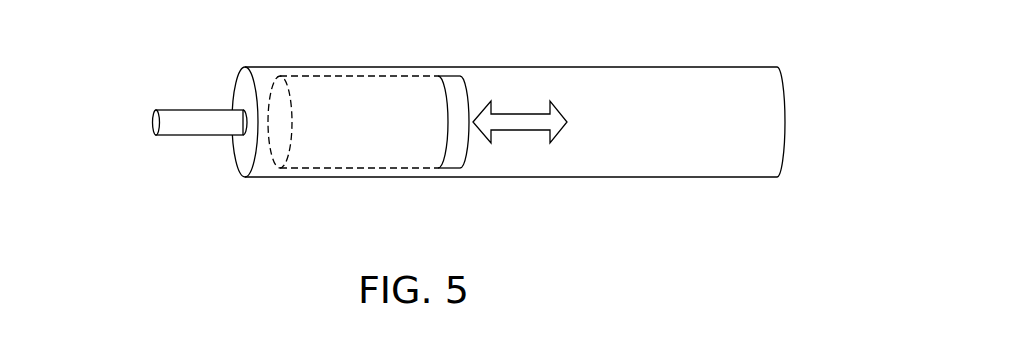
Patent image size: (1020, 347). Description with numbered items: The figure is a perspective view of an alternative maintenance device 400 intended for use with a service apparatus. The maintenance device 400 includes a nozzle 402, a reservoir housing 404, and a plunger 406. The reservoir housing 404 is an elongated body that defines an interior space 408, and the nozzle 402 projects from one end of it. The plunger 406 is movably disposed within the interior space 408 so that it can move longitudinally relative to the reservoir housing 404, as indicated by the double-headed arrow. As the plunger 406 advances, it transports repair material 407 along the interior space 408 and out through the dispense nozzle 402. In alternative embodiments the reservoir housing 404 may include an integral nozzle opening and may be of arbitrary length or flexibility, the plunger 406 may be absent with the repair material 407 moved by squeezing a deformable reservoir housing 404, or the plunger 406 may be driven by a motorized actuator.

The maintenance device 400 is at (136, 36).
The nozzle 402 is at (202, 135).
The reservoir housing 404 is at (673, 67).
The plunger 406 is at (453, 147).
The repair material 407 is at (332, 143).
The interior space 408 is at (702, 143).